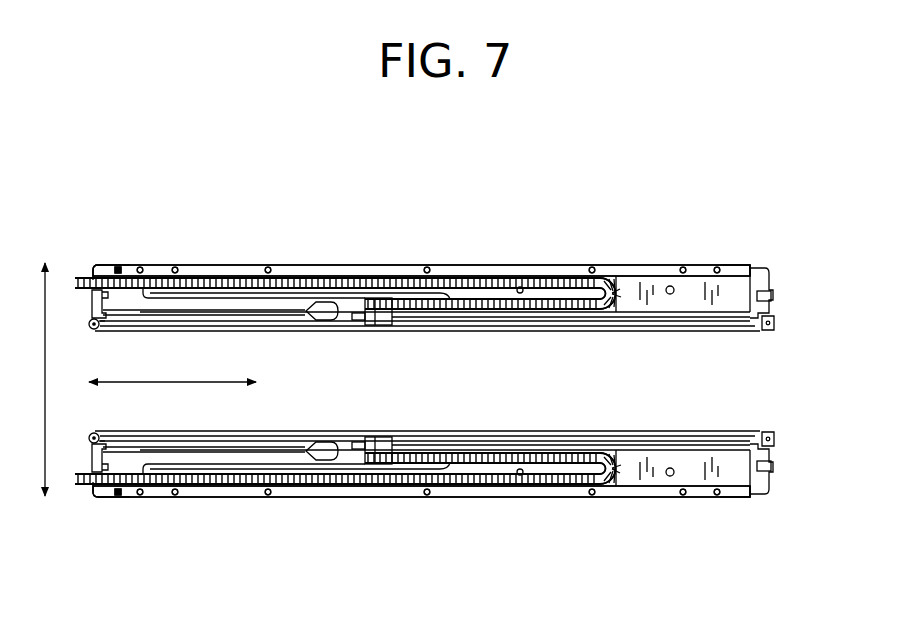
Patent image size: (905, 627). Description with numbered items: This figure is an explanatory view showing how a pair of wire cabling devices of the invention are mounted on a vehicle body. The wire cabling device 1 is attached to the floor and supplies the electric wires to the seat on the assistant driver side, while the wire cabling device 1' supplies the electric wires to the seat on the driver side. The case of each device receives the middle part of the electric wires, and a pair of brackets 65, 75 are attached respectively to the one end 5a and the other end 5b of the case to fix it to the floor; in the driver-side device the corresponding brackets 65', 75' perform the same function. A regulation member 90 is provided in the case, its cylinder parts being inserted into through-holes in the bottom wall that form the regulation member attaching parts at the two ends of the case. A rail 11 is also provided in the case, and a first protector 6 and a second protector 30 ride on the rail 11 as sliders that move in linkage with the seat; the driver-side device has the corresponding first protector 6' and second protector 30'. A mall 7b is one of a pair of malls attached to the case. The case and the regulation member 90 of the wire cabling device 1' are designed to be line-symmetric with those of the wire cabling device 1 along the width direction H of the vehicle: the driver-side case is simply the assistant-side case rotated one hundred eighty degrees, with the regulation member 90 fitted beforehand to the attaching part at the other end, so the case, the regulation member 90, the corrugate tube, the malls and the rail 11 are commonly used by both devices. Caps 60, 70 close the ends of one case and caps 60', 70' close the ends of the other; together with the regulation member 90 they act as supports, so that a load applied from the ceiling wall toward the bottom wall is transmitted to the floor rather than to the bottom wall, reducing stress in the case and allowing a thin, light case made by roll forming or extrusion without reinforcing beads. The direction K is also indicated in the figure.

The wire cabling device 1 is at (421, 534).
The wire cabling device 1' is at (421, 230).
The one end of case 5a is at (756, 266).
The other end of case 5b is at (108, 258).
The first protector 6 is at (387, 424).
The first protector 6' is at (389, 340).
The mall 7b is at (645, 331).
The rail 11 is at (700, 313).
The second protector 30 is at (220, 422).
The second protector 30' is at (222, 342).
The cap 60 is at (94, 505).
The cap 60' is at (96, 257).
The bracket 65 is at (82, 425).
The bracket 65' is at (82, 340).
The cap 70 is at (801, 476).
The cap 70' is at (802, 288).
The bracket 75 is at (801, 464).
The bracket 75' is at (801, 303).
The regulation member 90 is at (299, 290).
The width direction of vehicle H is at (57, 366).
The stroke direction K is at (160, 382).